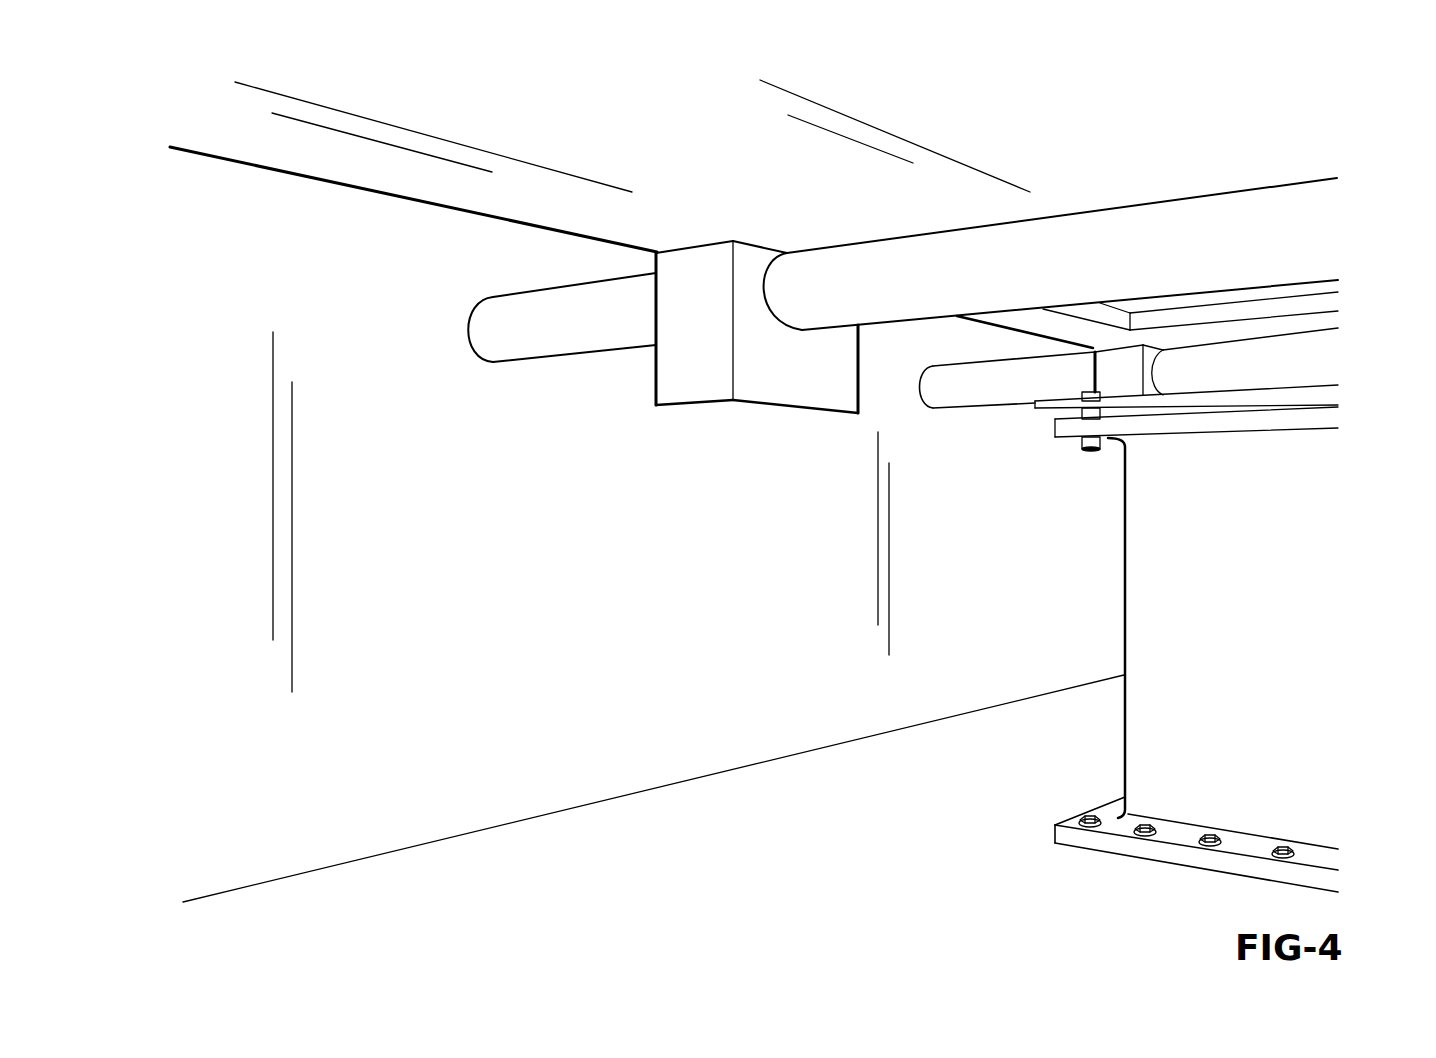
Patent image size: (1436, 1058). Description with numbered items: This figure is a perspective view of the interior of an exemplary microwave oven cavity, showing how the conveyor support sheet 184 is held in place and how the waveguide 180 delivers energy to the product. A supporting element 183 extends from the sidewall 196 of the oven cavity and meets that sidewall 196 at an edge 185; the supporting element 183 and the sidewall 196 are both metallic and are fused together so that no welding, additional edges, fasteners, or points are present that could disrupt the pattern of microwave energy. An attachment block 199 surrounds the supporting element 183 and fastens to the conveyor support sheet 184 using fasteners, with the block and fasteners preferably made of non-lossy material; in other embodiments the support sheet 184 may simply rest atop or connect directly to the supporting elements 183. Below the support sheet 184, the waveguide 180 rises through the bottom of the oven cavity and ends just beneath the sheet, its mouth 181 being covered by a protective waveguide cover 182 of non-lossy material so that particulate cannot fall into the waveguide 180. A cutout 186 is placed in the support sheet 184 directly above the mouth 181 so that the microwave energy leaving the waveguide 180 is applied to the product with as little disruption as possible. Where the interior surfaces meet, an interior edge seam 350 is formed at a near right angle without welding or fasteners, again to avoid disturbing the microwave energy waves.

The waveguide 180 is at (1205, 665).
The mouth 181 is at (1220, 407).
The waveguide cover 182 is at (1178, 398).
The supporting element 183 is at (1173, 257).
The conveyor support sheet 184 is at (1165, 135).
The edge 185 is at (470, 336).
The cutout 186 is at (1203, 300).
The sidewall 196 is at (643, 553).
The attachment block 199 is at (692, 287).
The interior edge seam 350 is at (632, 790).